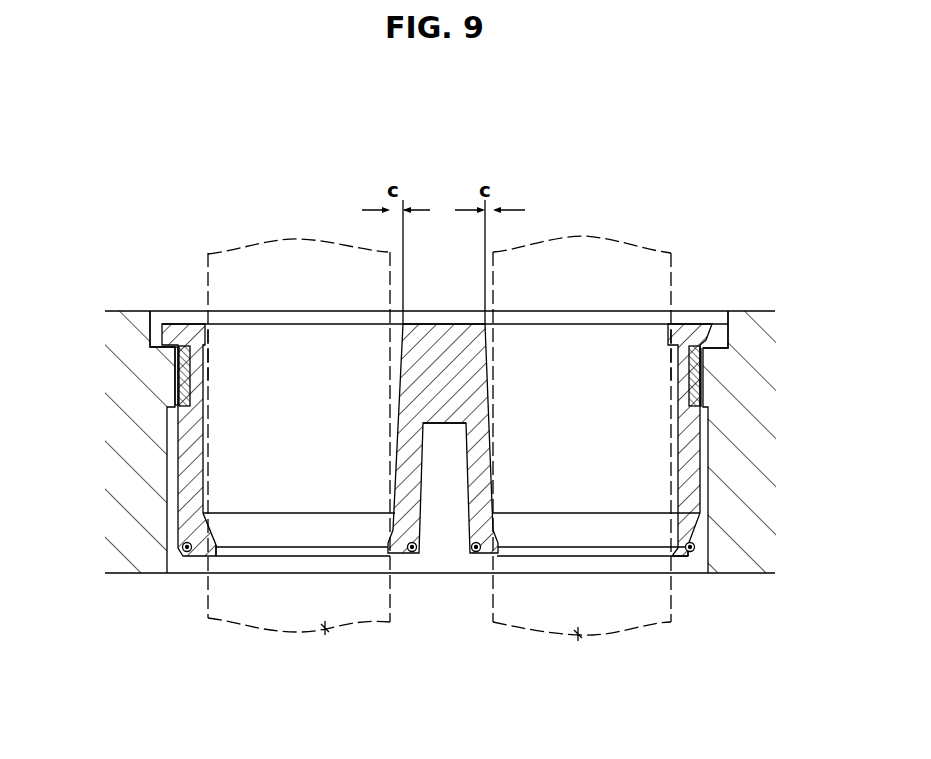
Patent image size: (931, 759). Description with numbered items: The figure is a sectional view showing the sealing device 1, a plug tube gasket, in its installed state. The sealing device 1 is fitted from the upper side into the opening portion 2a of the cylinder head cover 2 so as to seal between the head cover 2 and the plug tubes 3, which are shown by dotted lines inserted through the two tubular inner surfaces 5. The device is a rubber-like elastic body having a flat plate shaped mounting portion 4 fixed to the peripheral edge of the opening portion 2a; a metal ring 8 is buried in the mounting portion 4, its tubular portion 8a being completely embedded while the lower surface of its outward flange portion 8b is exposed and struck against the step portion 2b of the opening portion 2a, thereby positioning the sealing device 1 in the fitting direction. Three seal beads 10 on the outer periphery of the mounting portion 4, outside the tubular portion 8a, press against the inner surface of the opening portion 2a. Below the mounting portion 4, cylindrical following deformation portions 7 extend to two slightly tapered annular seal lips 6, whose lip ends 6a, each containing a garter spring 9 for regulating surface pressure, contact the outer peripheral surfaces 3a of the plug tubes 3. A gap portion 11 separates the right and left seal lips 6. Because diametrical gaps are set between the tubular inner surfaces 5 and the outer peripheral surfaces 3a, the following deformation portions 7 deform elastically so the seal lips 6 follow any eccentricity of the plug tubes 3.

The sealing device 1 is at (190, 308).
The cylinder head cover 2 is at (753, 320).
The opening portion 2a is at (162, 320).
The step portion 2b is at (723, 345).
The plug tube 3 is at (325, 628).
The outer peripheral surface 3a is at (207, 595).
The mounting portion 4 is at (443, 347).
The tubular inner surface 5 is at (215, 348).
The seal lip 6 is at (187, 533).
The lip end 6a is at (216, 556).
The following deformation portion 7 is at (190, 498).
The metal ring 8 is at (180, 372).
The tubular portion 8a is at (176, 380).
The flange portion 8b is at (718, 347).
The garter spring 9 is at (187, 552).
The seal bead 10 is at (708, 413).
The gap portion 11 is at (442, 520).